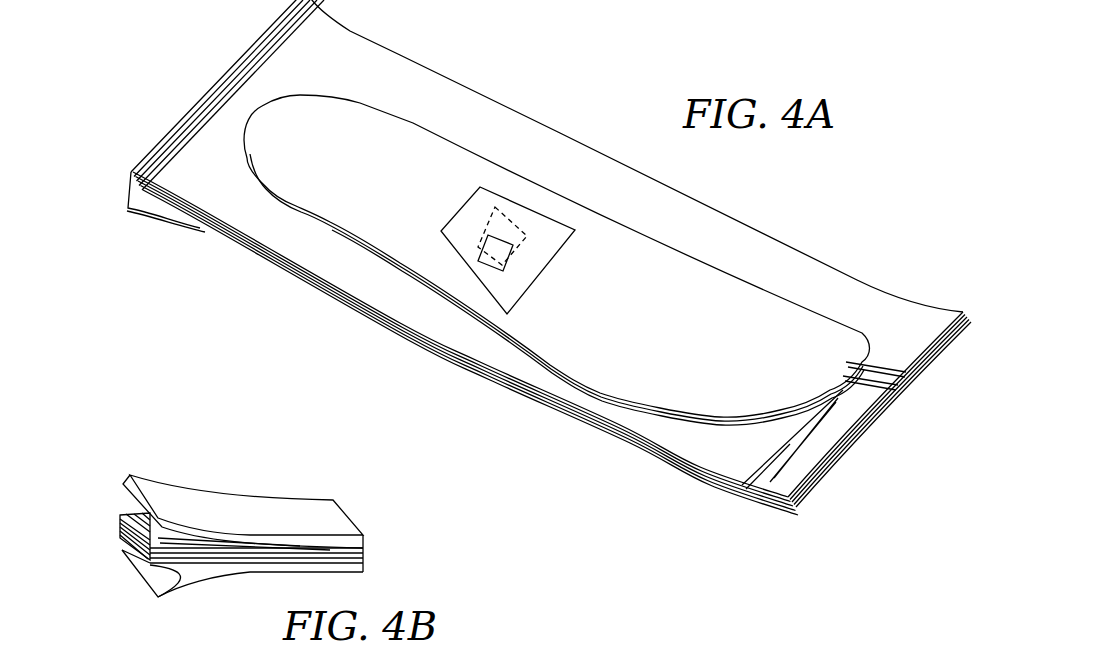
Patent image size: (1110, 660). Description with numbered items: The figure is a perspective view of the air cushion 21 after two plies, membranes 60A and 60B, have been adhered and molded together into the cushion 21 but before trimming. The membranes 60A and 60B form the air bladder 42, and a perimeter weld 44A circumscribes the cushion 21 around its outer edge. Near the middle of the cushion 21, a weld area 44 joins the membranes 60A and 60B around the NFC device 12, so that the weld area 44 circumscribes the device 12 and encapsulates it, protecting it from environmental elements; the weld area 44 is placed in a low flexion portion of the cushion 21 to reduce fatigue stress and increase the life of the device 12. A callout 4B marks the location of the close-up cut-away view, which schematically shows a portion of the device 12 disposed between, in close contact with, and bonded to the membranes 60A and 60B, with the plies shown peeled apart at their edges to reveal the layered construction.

In FIG. 4A, the membrane 60A is at (135, 168).
In FIG. 4B, the membrane 60A is at (228, 511).
In FIG. 4A, the membrane 60B is at (143, 218).
In FIG. 4B, the membrane 60B is at (240, 566).
In FIG. 4A, the perimeter weld 44A is at (300, 208).
In FIG. 4A, the cushion 21 is at (503, 131).
In FIG. 4A, the NFC device 12 is at (504, 196).
In FIG. 4B, the NFC device 12 is at (122, 531).
In FIG. 4A, the weld area 44 is at (545, 242).
In FIG. 4A, the callout 4B is at (472, 270).
In FIG. 4A, the air bladder 42 is at (583, 347).
In FIG. 4B, the air bladder 42 is at (256, 553).